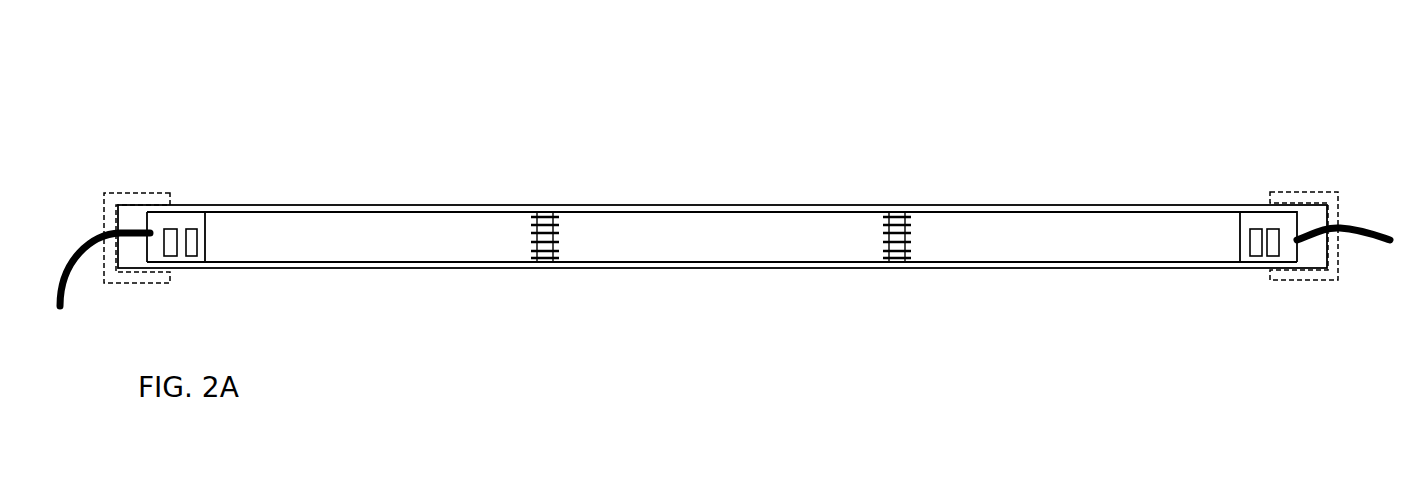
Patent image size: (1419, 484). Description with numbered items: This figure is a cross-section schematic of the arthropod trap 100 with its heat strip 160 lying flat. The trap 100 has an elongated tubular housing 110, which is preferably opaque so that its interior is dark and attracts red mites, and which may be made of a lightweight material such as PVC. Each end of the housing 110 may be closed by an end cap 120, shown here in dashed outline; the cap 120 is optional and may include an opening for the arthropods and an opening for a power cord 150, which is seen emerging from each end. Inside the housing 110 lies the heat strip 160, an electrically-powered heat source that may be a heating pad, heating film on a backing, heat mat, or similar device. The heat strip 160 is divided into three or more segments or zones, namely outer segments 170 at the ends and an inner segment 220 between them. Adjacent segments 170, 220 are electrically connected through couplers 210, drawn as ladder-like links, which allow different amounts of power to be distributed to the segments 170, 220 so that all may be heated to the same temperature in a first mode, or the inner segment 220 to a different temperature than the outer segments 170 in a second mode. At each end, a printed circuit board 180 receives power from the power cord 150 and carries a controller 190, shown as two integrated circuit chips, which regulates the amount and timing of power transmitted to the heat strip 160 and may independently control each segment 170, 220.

The arthropod trap 100 is at (1111, 79).
The housing 110 is at (947, 207).
The end cap 120 is at (140, 192).
The power cord 150 is at (65, 298).
The heat strip 160 is at (332, 213).
The outer segments 170 is at (325, 263).
The printed circuit board 180 is at (182, 217).
The controller 190 is at (192, 232).
The couplers 210 is at (547, 212).
The inner segment 220 is at (665, 262).